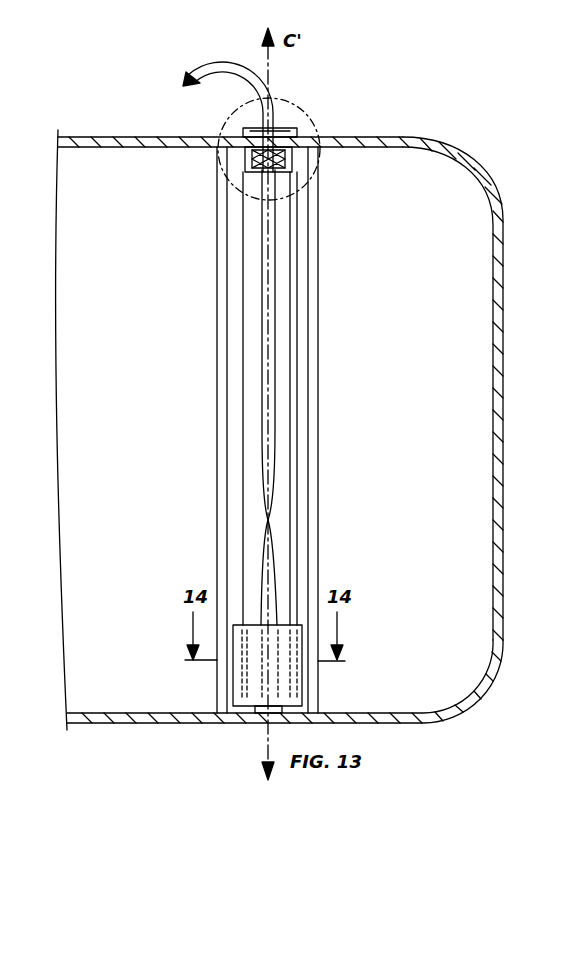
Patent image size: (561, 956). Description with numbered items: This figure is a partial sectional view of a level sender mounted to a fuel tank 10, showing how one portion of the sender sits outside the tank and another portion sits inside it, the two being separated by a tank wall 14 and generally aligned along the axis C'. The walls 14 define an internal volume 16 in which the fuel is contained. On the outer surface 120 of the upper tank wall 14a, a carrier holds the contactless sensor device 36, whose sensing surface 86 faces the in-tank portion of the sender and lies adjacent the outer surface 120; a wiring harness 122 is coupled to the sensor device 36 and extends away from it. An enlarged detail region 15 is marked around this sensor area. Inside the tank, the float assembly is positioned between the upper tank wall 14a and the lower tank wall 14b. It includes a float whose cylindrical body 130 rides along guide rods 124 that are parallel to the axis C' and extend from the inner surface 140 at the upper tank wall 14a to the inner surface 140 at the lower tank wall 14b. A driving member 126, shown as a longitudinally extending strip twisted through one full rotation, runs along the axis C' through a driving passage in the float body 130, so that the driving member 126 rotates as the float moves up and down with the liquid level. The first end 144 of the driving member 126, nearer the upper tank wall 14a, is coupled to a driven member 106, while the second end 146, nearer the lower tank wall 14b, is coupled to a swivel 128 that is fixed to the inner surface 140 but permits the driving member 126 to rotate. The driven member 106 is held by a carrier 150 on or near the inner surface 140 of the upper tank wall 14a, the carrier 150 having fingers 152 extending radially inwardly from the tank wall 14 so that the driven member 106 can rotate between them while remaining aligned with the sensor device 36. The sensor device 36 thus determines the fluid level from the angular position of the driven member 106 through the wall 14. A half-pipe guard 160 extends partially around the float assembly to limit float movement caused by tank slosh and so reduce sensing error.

The fuel tank 10 is at (299, 418).
The wall 14 is at (504, 247).
The upper tank wall 14a is at (73, 137).
The lower tank wall 14b is at (104, 724).
The detail circle 15 is at (313, 120).
The internal volume 16 is at (458, 372).
The sensor device 36 is at (250, 153).
The sensing surface 86 is at (300, 143).
The driven member 106 is at (292, 155).
The outer surface 120 is at (108, 137).
The wiring harness 122 is at (208, 67).
The guide rods 124 is at (243, 523).
The driving member 126 is at (272, 430).
The swivel 128 is at (300, 712).
The body 130 is at (235, 680).
The inner surface 140 is at (90, 713).
The first end 144 is at (258, 162).
The second end 146 is at (272, 690).
The carrier 150 is at (282, 172).
The fingers 152 is at (288, 166).
The guard 160 is at (218, 550).